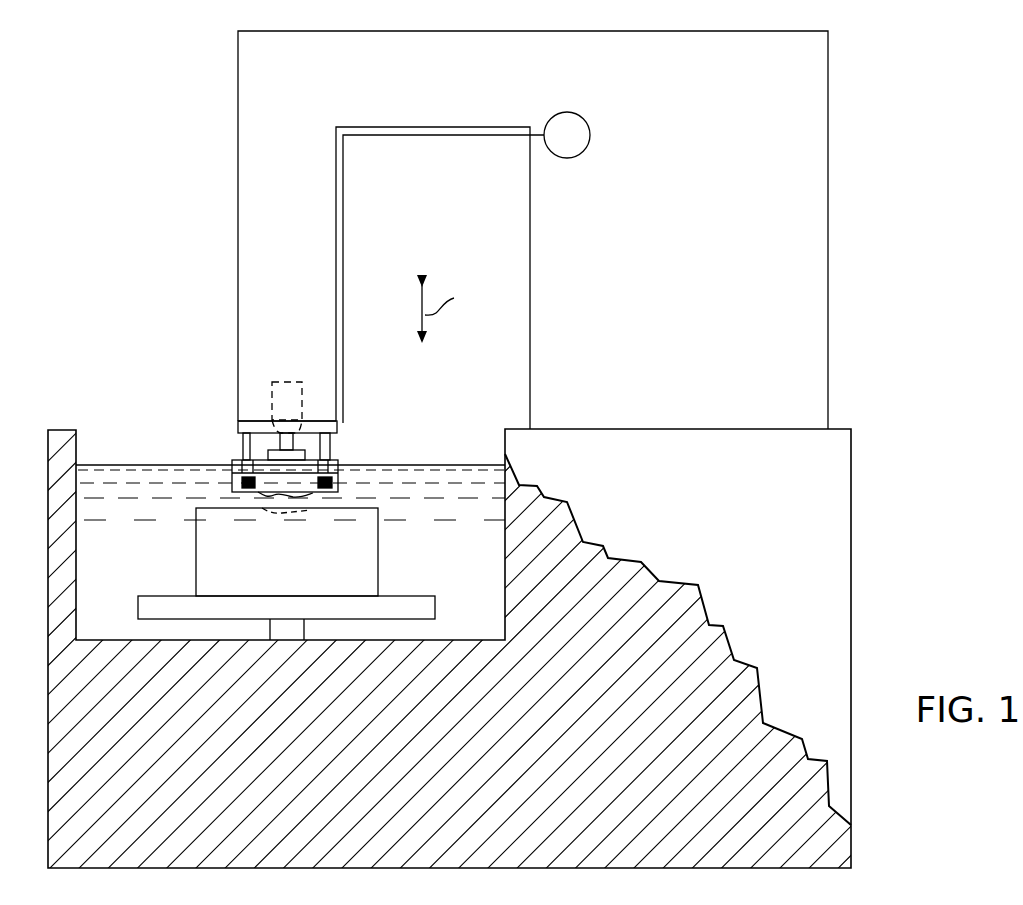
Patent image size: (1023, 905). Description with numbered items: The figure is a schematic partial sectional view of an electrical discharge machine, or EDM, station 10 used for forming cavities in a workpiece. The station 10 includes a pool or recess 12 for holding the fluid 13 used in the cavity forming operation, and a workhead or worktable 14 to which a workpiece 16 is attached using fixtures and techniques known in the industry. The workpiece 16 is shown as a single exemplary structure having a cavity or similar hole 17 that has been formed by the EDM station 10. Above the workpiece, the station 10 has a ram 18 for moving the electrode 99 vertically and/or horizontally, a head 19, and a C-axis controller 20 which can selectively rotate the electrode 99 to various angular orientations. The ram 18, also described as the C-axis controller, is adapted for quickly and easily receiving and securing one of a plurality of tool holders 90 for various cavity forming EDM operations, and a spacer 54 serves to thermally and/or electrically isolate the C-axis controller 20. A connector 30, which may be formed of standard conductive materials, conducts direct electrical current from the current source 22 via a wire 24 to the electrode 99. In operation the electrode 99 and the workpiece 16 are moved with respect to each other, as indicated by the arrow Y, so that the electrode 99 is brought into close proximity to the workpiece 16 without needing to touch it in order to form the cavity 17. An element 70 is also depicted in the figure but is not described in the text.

The electrical discharge machine station 10 is at (882, 344).
The pool or recess 12 is at (464, 599).
The fluid 13 is at (118, 463).
The workhead 14 is at (165, 597).
The workpiece 16 is at (357, 558).
The cavity 17 is at (278, 513).
The ram 18 is at (244, 400).
The head 19 is at (302, 276).
The C-axis controller 20 is at (273, 382).
The current source 22 is at (582, 152).
The wire 24 is at (343, 243).
The connector 30 is at (238, 427).
The spacer 54 is at (232, 468).
The seal 70 is at (340, 482).
The tool holder 90 is at (337, 440).
The electrode 99 is at (262, 496).